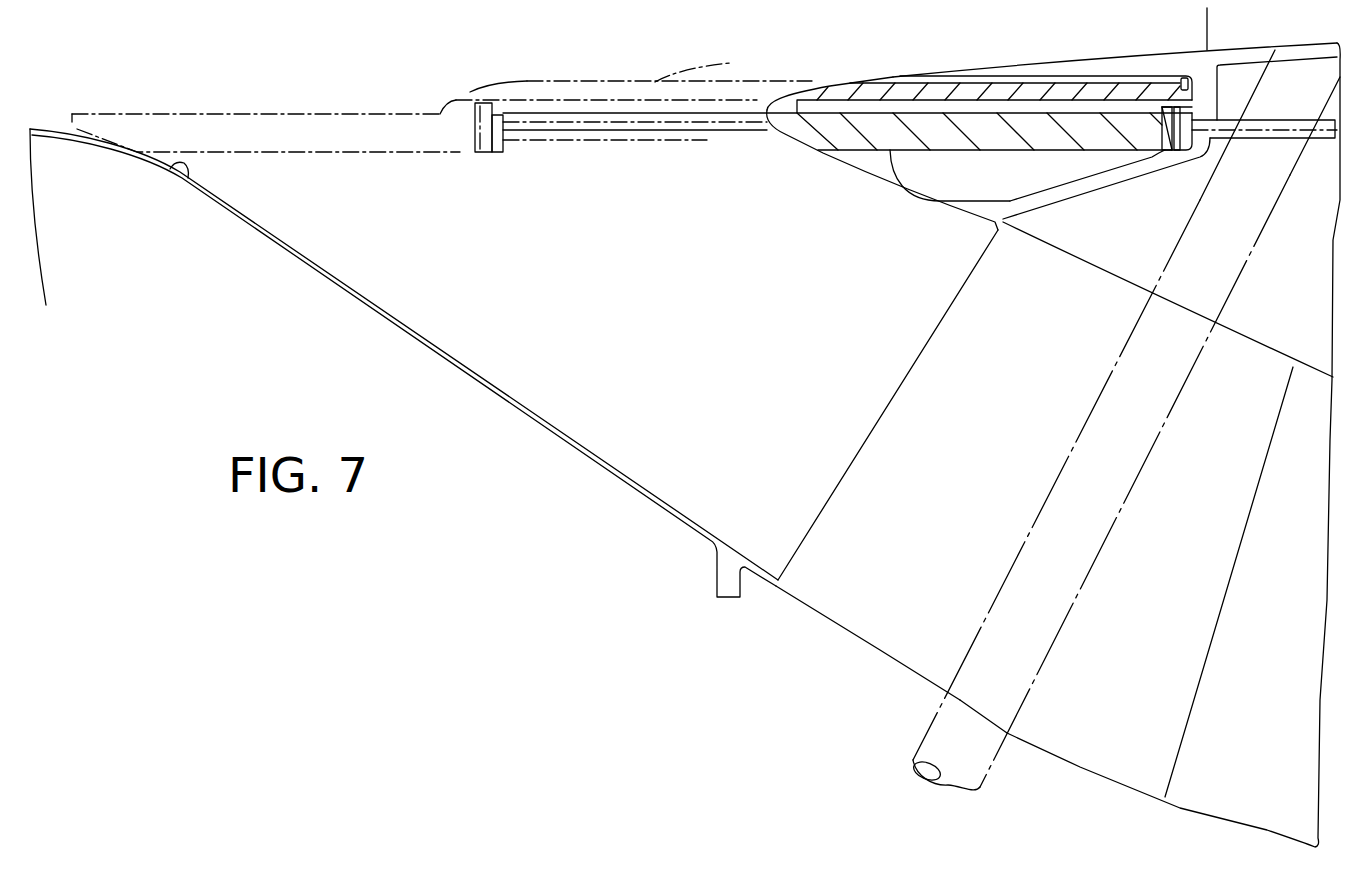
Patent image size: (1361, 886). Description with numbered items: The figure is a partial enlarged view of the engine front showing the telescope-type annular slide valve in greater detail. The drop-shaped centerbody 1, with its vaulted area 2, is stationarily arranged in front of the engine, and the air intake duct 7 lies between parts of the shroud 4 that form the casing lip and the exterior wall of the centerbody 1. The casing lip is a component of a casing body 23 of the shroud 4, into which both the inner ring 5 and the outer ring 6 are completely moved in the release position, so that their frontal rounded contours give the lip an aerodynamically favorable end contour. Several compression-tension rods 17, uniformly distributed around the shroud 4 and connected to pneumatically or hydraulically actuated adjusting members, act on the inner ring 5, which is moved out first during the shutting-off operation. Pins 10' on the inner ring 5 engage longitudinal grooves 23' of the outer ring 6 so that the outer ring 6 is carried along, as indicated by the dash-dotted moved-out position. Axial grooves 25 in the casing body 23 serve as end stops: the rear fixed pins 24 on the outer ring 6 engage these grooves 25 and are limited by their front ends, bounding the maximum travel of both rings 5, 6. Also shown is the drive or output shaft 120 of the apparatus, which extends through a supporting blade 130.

The centerbody 1 is at (390, 311).
The vaulted area 2 is at (88, 145).
The shroud 4 is at (1214, 48).
The inner ring 5 is at (392, 150).
The outer ring 6 is at (833, 86).
The air intake duct 7 is at (694, 349).
The pin 10' is at (831, 151).
The compression-tension rod 17 is at (1323, 140).
The casing body 23 is at (1069, 141).
The longitudinal groove 23' is at (994, 157).
The rear fixed pin 24 is at (1182, 82).
The axial groove 25 is at (1067, 77).
The drive or output shaft 120 is at (1079, 585).
The supporting blade 130 is at (873, 640).